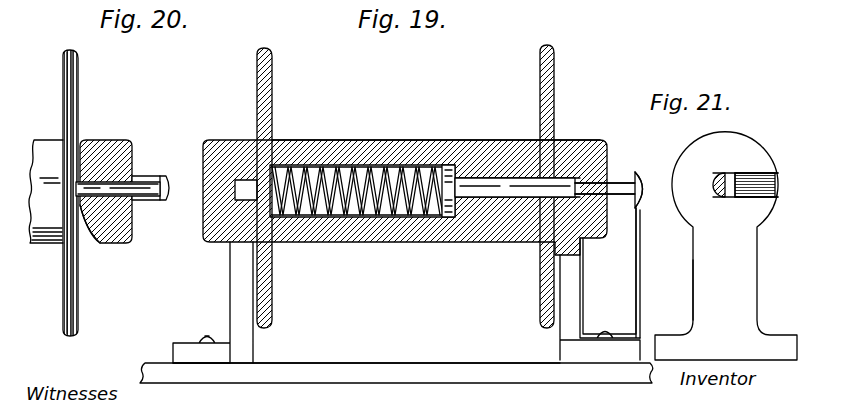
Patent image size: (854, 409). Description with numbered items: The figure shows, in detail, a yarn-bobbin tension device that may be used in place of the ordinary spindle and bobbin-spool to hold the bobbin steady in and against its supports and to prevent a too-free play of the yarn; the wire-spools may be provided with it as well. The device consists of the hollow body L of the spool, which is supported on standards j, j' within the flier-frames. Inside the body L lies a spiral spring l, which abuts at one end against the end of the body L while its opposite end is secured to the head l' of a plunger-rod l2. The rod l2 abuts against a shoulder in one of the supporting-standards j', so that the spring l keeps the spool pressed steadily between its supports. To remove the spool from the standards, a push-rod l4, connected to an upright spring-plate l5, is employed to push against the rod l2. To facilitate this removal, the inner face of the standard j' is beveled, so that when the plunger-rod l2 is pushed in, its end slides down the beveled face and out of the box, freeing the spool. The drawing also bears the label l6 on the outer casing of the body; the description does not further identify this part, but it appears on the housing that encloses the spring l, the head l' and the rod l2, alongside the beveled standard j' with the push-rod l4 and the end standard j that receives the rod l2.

In FIG. 20, the hollow body of the spool L is at (43, 141).
In FIG. 19, the hollow body of the spool L is at (416, 140).
In FIG. 19, the supporting-standard j is at (406, 285).
In FIG. 20, the supporting-standard j' is at (106, 214).
In FIG. 19, the supporting-standard j' is at (628, 176).
In FIG. 21, the supporting-standard j' is at (764, 199).
In FIG. 19, the spiral spring l is at (357, 223).
In FIG. 19, the head of plunger-rod l' is at (447, 222).
In FIG. 19, the plunger-rod l2 is at (516, 198).
In FIG. 21, the plunger-rod l2 is at (725, 198).
In FIG. 20, the push-rod l4 is at (150, 204).
In FIG. 19, the push-rod l4 is at (626, 196).
In FIG. 19, the upright spring-plate l5 is at (641, 278).
In FIG. 21, the upright spring-plate l5 is at (638, 282).
In FIG. 19, the casing / standard l6 is at (586, 140).
In FIG. 21, the casing / standard l6 is at (700, 148).